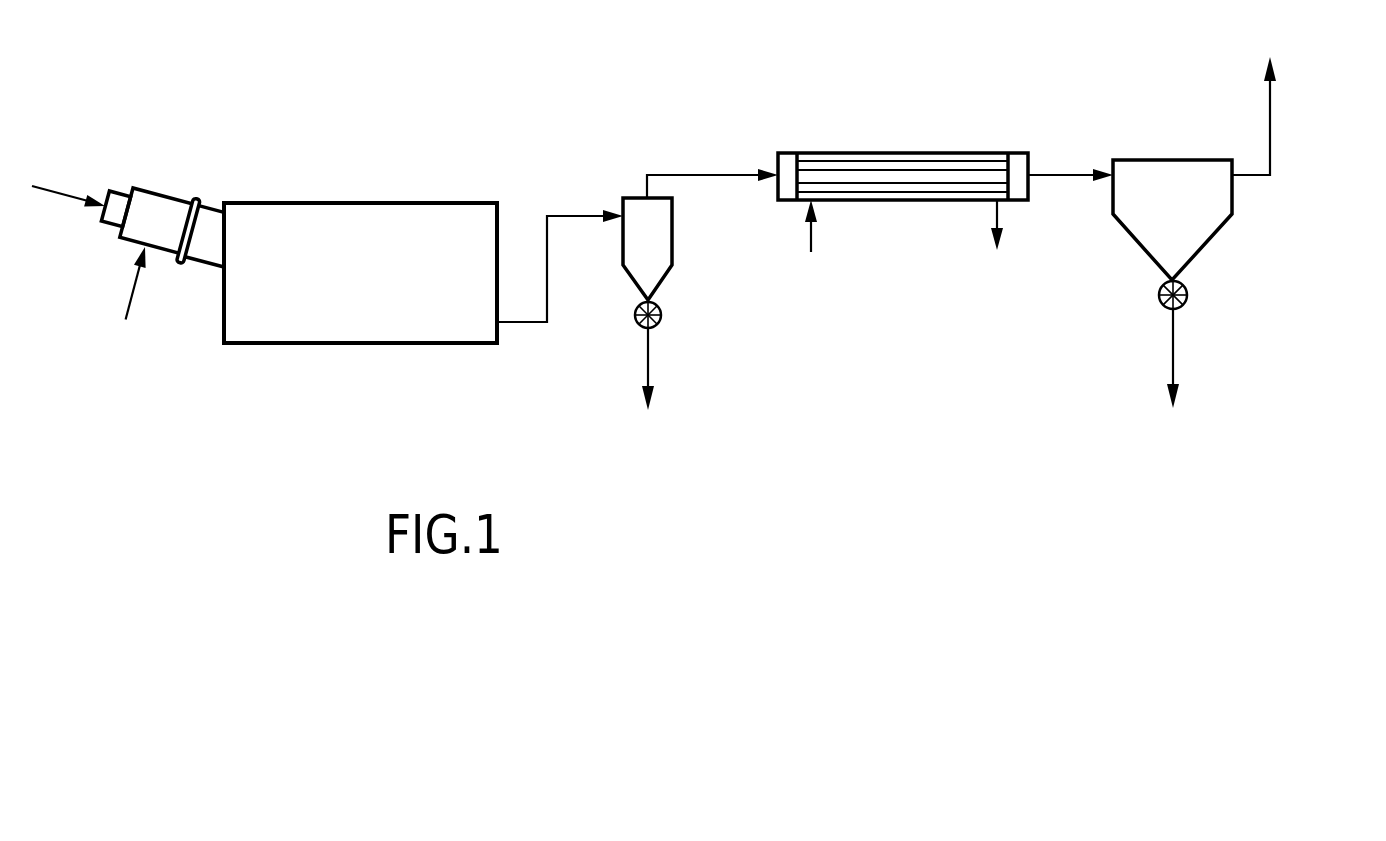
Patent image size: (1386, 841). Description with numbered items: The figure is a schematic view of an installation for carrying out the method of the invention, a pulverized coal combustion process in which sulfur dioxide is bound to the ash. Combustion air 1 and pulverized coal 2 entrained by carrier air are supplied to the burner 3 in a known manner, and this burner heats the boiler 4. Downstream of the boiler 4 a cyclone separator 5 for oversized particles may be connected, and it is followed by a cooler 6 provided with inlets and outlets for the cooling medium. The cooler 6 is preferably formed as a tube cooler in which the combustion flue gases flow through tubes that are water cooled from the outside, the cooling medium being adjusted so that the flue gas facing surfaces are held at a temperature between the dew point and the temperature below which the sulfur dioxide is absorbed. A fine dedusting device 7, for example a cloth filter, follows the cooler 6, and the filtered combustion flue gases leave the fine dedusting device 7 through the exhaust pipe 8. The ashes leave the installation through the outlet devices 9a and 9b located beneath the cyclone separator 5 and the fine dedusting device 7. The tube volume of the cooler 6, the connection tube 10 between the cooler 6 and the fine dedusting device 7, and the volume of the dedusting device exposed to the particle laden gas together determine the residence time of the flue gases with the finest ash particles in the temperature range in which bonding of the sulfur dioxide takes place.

The combustion air 1 is at (130, 293).
The pulverized coal 2 is at (57, 188).
The burner 3 is at (153, 213).
The boiler 4 is at (375, 223).
The cyclone separator 5 is at (633, 230).
The cooler 6 is at (890, 167).
The fine dedusting device 7 is at (1162, 185).
The exhaust pipe 8 is at (1272, 118).
The outlet device 9a is at (650, 363).
The outlet device 9b is at (1173, 362).
The connection tube 10 is at (1067, 177).